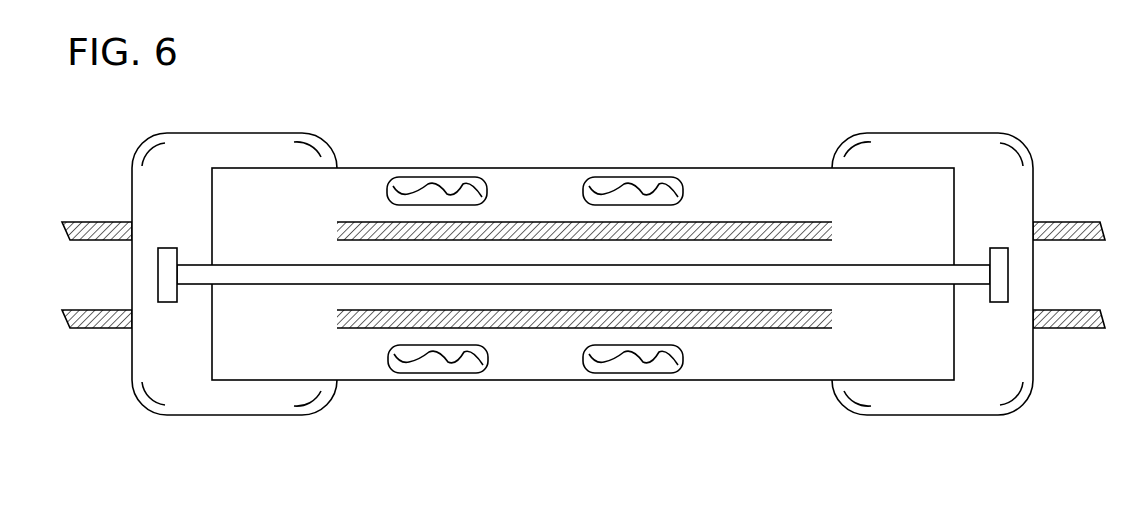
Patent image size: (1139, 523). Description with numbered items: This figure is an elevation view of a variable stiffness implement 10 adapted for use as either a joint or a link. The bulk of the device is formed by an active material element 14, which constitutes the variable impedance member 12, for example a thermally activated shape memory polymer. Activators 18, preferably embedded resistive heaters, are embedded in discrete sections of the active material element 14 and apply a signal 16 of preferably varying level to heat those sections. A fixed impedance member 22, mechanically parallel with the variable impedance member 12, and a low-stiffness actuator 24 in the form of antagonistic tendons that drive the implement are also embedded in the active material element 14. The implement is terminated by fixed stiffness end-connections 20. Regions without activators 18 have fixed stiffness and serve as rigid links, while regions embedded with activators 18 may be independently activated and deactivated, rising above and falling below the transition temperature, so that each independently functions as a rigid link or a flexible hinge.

The variable stiffness implement 10 is at (1034, 452).
The variable impedance member 12 is at (336, 133).
The active material element 14 is at (698, 381).
The signal 16 is at (437, 360).
The activator 18 is at (418, 373).
The fixed stiffness end-connection 20 is at (191, 200).
The fixed impedance member 22 is at (158, 276).
The low-stiffness actuator 24 is at (1068, 222).